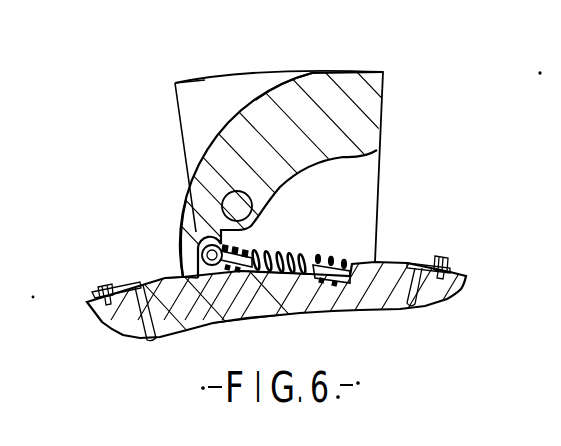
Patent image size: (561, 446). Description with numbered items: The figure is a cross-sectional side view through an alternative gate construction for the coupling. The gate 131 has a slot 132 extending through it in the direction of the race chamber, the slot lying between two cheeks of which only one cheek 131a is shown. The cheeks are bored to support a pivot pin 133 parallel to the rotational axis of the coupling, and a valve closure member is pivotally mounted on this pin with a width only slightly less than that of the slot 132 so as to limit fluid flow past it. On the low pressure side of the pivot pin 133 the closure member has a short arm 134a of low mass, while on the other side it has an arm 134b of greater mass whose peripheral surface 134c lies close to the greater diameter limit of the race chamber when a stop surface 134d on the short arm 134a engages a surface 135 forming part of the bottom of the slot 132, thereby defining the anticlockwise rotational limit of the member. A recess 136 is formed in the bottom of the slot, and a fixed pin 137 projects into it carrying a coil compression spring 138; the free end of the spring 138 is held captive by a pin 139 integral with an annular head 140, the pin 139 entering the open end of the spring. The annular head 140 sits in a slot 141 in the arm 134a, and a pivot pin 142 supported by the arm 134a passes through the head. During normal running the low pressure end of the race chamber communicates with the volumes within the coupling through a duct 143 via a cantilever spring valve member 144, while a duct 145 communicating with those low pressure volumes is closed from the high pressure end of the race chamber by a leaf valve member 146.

The gate 131 is at (225, 75).
The cheek 131a is at (180, 80).
The slot 132 is at (192, 128).
The pivot pin 133 is at (224, 200).
The short arm 134a is at (195, 222).
The arm 134b is at (352, 113).
The peripheral surface 134c is at (340, 72).
The stop surface 134d is at (195, 275).
The surface 135 is at (181, 278).
The recess 136 is at (327, 292).
The fixed pin 137 is at (328, 258).
The coil compression spring 138 is at (264, 250).
The pin 139 is at (270, 307).
The annular head 140 is at (228, 297).
The slot 141 is at (207, 280).
The pivot pin 142 is at (200, 249).
The duct 143 is at (120, 333).
The cantilever spring valve member 144 is at (123, 281).
The duct 145 is at (419, 288).
The leaf valve member 146 is at (417, 263).